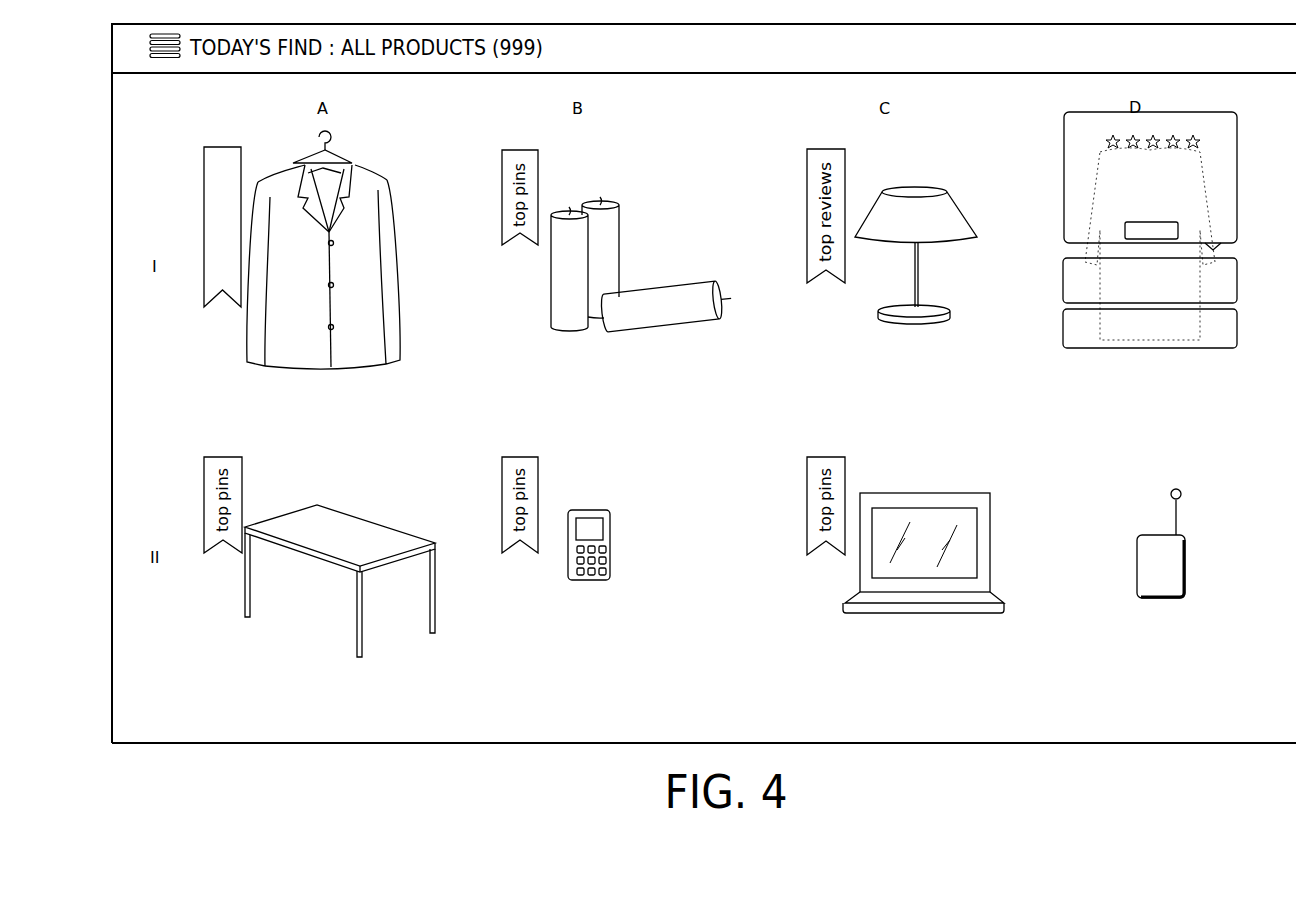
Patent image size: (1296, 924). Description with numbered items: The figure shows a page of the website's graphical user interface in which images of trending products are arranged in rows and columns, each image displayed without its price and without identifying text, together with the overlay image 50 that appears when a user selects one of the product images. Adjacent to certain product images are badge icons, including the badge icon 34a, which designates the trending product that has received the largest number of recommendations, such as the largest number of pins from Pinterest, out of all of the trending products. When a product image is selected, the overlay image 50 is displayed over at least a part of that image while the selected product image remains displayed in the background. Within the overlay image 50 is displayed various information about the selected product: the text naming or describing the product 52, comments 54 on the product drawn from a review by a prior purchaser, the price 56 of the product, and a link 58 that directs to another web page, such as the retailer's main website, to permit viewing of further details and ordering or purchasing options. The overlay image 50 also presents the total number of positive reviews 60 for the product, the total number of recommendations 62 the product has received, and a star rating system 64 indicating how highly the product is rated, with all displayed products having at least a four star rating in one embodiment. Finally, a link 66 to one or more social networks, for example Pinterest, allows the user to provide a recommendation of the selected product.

The badge icon 34a is at (222, 147).
The overlay image 50 is at (1135, 251).
The text naming or describing the product 52 is at (1146, 280).
The comments 54 is at (1057, 166).
The price 56 is at (1056, 272).
The link 58 is at (1162, 357).
The total number of positive reviews 60 is at (1214, 187).
The total number of recommendations 62 is at (1214, 210).
The star rating system 64 is at (1182, 129).
The link to one or more social networks 66 is at (1191, 231).